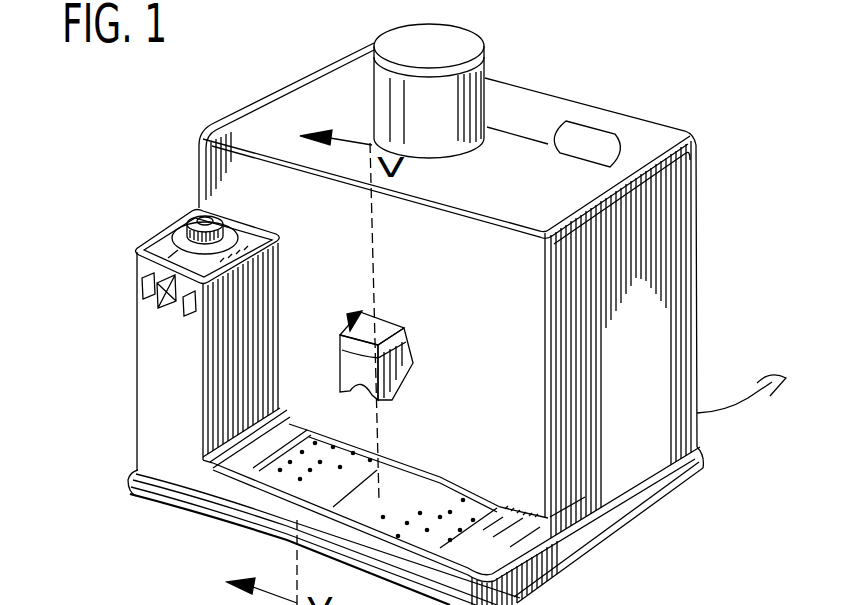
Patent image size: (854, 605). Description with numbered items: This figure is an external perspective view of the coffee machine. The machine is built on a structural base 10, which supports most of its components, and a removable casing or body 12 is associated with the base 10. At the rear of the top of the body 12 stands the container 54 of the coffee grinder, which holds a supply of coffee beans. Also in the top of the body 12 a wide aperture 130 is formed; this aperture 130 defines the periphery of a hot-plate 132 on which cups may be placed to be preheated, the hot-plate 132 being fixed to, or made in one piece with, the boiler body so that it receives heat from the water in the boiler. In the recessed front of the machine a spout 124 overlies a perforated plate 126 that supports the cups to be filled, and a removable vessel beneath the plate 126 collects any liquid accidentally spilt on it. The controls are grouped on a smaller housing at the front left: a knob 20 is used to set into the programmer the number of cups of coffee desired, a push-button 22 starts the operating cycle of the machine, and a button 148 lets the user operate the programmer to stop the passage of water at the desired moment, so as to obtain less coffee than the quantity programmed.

The structural base 10 is at (660, 489).
The casing or body 12 is at (678, 303).
The knob 20 is at (177, 245).
The push-button 22 is at (202, 221).
The container 54 is at (485, 82).
The spout 124 is at (403, 357).
The perforated plate 126 is at (412, 492).
The wide aperture 130 is at (548, 108).
The hot-plate 132 is at (688, 170).
The button 148 is at (160, 297).